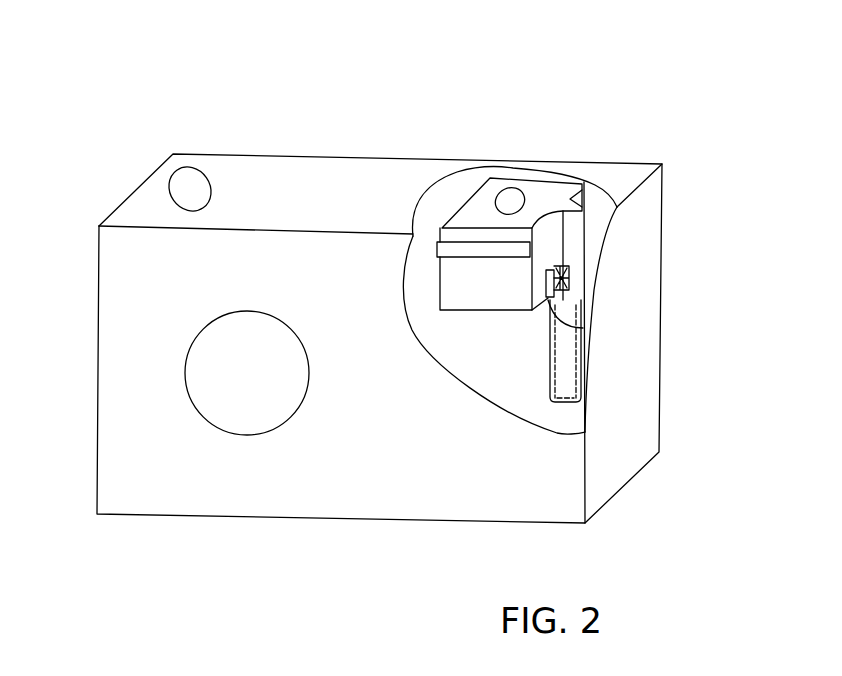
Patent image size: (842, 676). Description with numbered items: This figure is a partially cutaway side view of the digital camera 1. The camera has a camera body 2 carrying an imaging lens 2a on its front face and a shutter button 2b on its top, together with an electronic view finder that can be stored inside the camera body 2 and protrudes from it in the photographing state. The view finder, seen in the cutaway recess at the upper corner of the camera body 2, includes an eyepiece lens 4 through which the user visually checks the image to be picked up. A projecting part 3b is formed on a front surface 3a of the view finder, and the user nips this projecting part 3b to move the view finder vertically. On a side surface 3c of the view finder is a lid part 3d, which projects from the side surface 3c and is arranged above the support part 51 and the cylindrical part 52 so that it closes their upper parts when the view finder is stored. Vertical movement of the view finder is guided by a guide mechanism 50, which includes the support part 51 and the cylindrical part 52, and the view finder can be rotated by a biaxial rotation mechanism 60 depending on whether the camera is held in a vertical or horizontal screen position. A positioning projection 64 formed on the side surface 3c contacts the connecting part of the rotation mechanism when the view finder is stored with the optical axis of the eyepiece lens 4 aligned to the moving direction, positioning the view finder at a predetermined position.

The digital camera 1 is at (539, 106).
The camera body 2 is at (110, 368).
The imaging lens 2a is at (252, 425).
The shutter button 2b is at (195, 178).
The front surface 3a is at (483, 224).
The projecting part 3b is at (452, 250).
The side surface 3c is at (549, 250).
The lid part 3d is at (583, 199).
The eyepiece lens 4 is at (514, 194).
The guide mechanism 50 is at (715, 372).
The support part 51 is at (583, 357).
The cylindrical part 52 is at (583, 382).
The biaxial rotation mechanism 60 is at (569, 284).
The positioning projection 64 is at (584, 331).